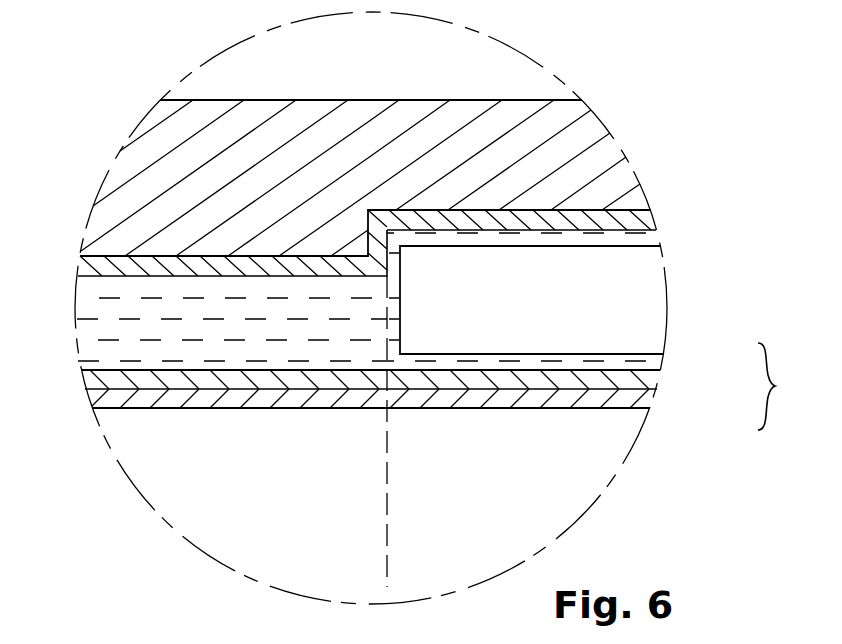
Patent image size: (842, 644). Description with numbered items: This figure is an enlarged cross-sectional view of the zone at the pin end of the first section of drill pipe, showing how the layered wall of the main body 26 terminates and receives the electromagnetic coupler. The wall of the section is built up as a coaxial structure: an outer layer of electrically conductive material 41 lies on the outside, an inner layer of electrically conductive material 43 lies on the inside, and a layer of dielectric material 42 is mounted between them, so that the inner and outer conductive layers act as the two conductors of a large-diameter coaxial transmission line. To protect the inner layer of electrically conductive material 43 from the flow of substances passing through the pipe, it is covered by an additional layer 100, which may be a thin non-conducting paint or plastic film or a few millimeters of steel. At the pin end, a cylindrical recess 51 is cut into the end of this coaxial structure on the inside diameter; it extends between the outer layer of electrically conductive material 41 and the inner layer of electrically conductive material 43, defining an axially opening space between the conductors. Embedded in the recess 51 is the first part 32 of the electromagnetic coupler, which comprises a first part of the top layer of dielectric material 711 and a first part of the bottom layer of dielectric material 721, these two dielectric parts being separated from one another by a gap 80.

The main body 26 is at (227, 137).
The outer layer of electrically conductive material 41 is at (160, 262).
The layer of dielectric material 42 is at (117, 328).
The inner layer of electrically conductive material 43 is at (170, 380).
The cylindrical recess 51 is at (479, 322).
The gap 80 is at (638, 297).
The additional layer 100 is at (317, 398).
The first part of the top layer of dielectric material 711 is at (590, 365).
The first part of the bottom layer of dielectric material 721 is at (520, 238).
The first part of the electromagnetic coupler 32 is at (784, 386).